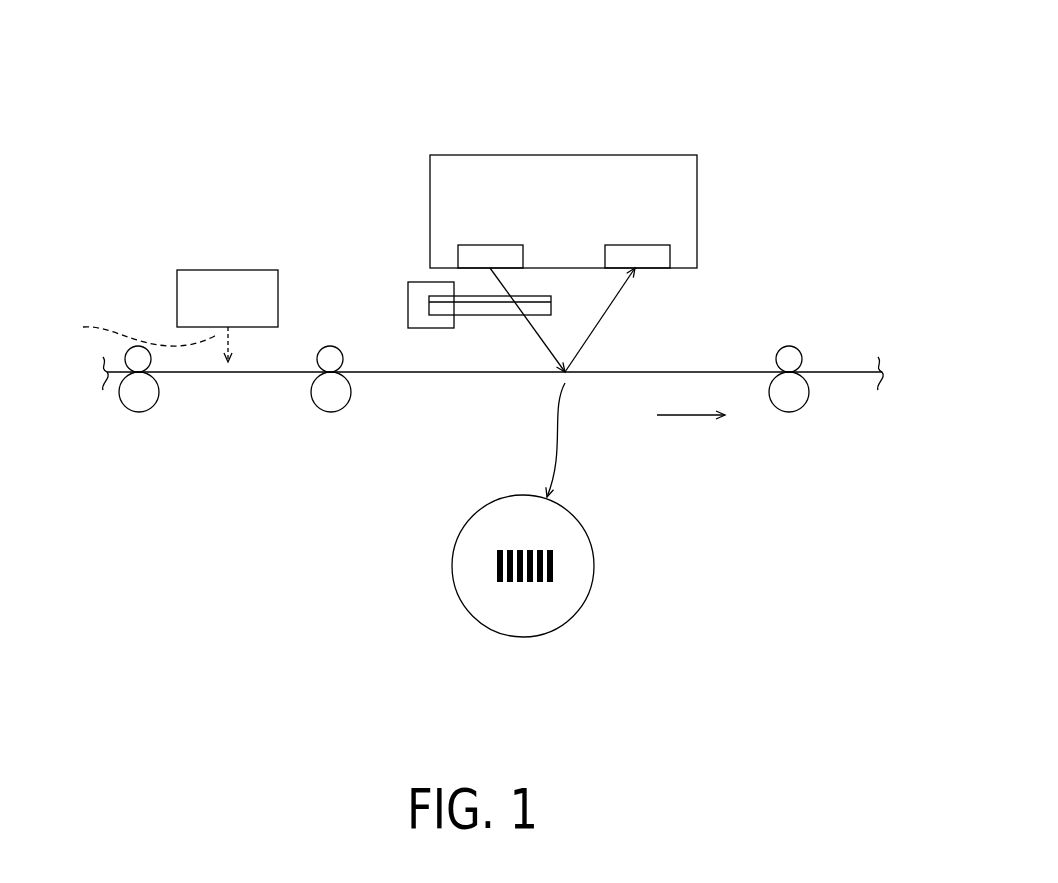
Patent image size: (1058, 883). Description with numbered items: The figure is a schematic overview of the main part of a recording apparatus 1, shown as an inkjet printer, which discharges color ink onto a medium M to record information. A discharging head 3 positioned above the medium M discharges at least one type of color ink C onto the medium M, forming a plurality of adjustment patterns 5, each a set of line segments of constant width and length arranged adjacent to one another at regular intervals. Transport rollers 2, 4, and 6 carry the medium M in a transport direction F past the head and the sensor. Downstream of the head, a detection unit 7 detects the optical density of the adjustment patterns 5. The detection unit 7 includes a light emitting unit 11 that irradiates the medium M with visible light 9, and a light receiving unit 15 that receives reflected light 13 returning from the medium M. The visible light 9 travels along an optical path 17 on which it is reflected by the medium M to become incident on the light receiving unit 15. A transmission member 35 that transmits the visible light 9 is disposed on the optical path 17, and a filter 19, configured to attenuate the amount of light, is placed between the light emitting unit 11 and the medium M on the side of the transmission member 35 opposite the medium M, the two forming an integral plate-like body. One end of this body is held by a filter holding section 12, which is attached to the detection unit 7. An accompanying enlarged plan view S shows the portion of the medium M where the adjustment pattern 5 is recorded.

The recording apparatus 1 is at (647, 100).
The transport roller 2 is at (139, 400).
The discharging head 3 is at (190, 327).
The transport roller 4 is at (332, 400).
The adjustment pattern 5 is at (487, 573).
The transport roller 6 is at (790, 400).
The detection unit 7 is at (663, 155).
The visible light 9 is at (533, 333).
The light emitting unit 11 is at (502, 245).
The filter holding section 12 is at (408, 300).
The reflected light 13 is at (605, 312).
The light receiving unit 15 is at (625, 245).
The optical path 17 is at (619, 367).
The filter 19 is at (462, 296).
The transmission member 35 is at (480, 316).
The medium M is at (288, 372).
The color ink C is at (138, 332).
The plan view S is at (595, 542).
The transport direction F is at (678, 415).